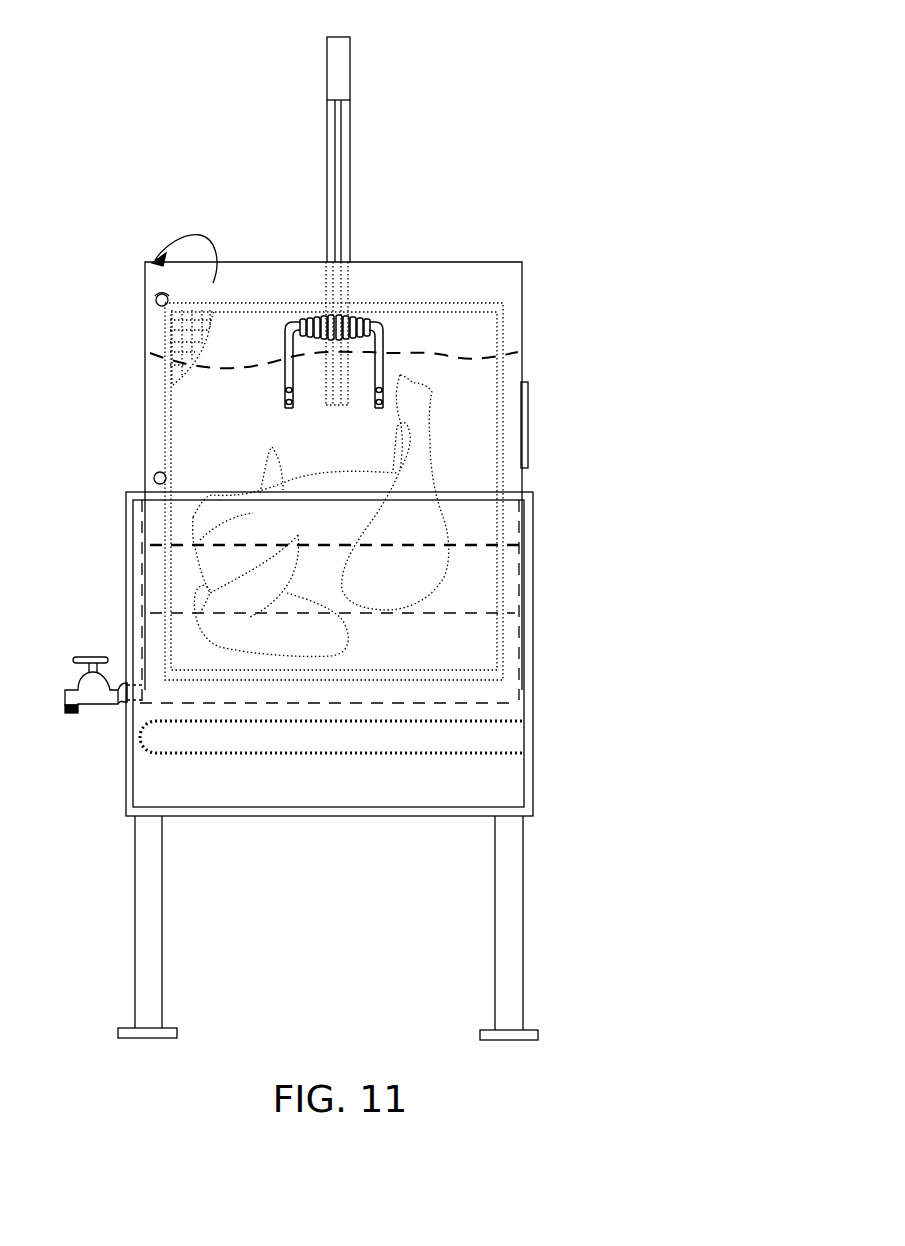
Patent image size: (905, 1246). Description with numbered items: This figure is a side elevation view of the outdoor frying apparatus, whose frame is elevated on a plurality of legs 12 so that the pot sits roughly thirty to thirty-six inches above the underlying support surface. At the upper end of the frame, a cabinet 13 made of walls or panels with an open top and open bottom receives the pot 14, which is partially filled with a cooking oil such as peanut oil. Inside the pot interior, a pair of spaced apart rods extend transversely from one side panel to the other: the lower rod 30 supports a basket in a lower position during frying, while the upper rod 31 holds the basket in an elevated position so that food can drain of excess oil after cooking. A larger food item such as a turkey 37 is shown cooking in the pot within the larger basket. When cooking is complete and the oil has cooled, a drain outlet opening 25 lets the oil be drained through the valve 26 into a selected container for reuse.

The legs 12 is at (150, 923).
The cabinet 13 is at (533, 772).
The pot 14 is at (522, 289).
The drain outlet opening 25 is at (140, 693).
The valve 26 is at (95, 702).
The lower rod 30 is at (158, 472).
The upper rod 31 is at (160, 307).
The turkey 37 is at (435, 527).